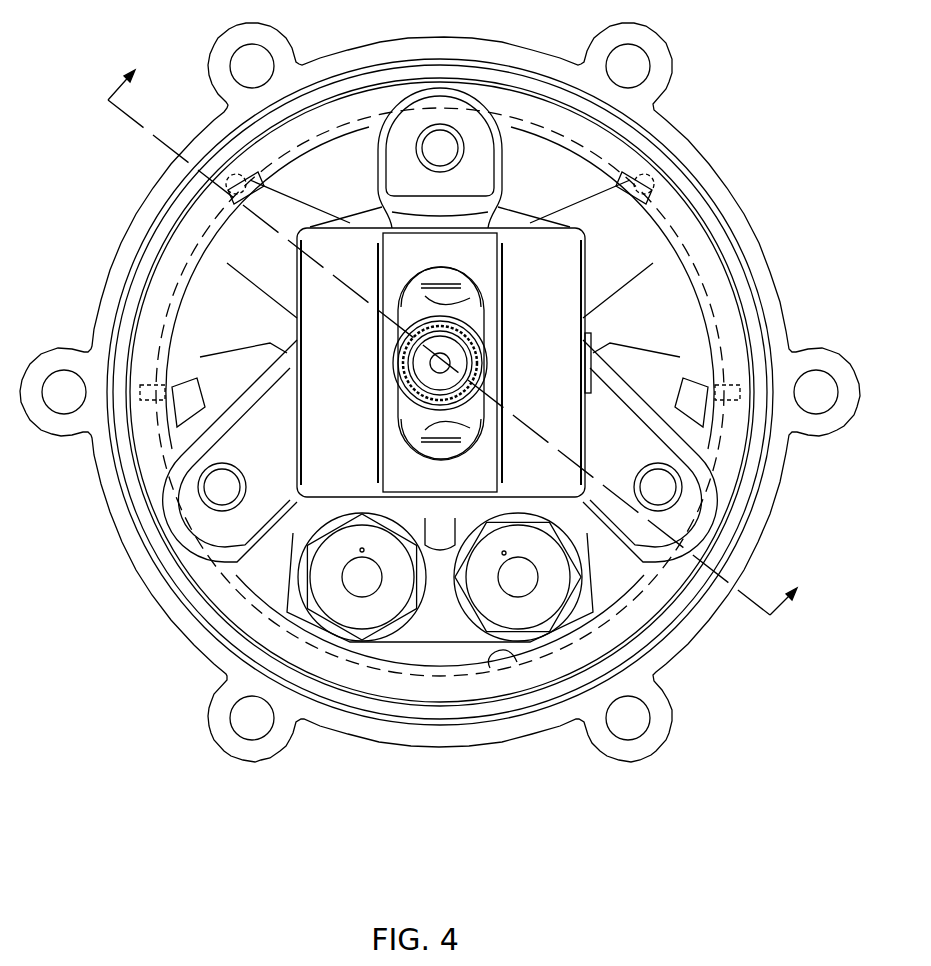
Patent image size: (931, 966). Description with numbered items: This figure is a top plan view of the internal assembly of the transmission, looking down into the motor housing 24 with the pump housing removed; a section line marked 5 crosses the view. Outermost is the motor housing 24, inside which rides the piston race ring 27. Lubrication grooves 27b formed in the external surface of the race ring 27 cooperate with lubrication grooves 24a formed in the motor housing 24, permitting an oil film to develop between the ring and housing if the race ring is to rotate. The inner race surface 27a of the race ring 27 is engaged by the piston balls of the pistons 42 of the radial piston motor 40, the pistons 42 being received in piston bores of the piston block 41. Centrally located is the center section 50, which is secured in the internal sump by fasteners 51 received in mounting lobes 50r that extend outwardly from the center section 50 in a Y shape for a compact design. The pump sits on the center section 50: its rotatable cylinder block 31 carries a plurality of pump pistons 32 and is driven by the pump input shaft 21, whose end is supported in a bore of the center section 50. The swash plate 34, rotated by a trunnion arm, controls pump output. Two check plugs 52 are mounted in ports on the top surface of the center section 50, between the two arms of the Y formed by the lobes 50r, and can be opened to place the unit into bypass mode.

The motor housing 24 is at (442, 35).
The lubrication grooves 24a is at (213, 640).
The piston race ring 27 is at (203, 212).
The race surface 27a is at (517, 662).
The lubrication grooves 27b is at (170, 233).
The section line 5- 5 is at (460, 330).
The radial piston motor 40 is at (192, 324).
The piston block 41 is at (224, 330).
The pistons 42 is at (186, 362).
The swash plate 34 is at (532, 315).
The cylinder block 31 is at (422, 305).
The pump pistons 32 is at (457, 297).
The pump input shaft 21 is at (422, 363).
The center section 50 is at (428, 627).
The mounting lobes 50r is at (422, 122).
The fasteners 51 is at (440, 147).
The check plugs 52 is at (385, 590).